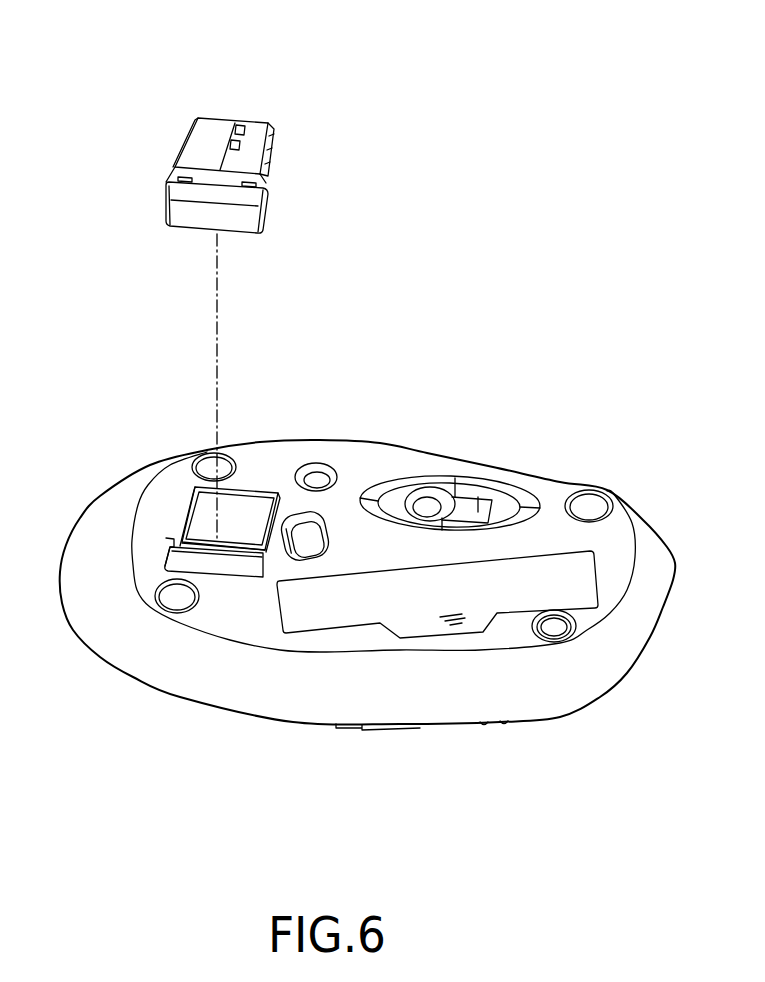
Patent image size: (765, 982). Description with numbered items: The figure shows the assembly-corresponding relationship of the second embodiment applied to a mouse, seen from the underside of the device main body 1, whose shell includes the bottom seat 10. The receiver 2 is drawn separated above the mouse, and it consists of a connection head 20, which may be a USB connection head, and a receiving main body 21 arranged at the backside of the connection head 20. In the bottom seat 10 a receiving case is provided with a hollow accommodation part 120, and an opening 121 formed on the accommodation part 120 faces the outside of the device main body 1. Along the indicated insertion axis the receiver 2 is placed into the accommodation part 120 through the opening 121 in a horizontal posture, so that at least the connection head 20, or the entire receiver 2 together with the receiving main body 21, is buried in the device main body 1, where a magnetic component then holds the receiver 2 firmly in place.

The device main body 1 is at (485, 440).
The receiver 2 is at (249, 110).
The bottom seat 10 is at (613, 670).
The connection head 20 is at (248, 147).
The receiving main body 21 is at (233, 223).
The accommodation part 120 is at (247, 510).
The opening 121 is at (207, 510).